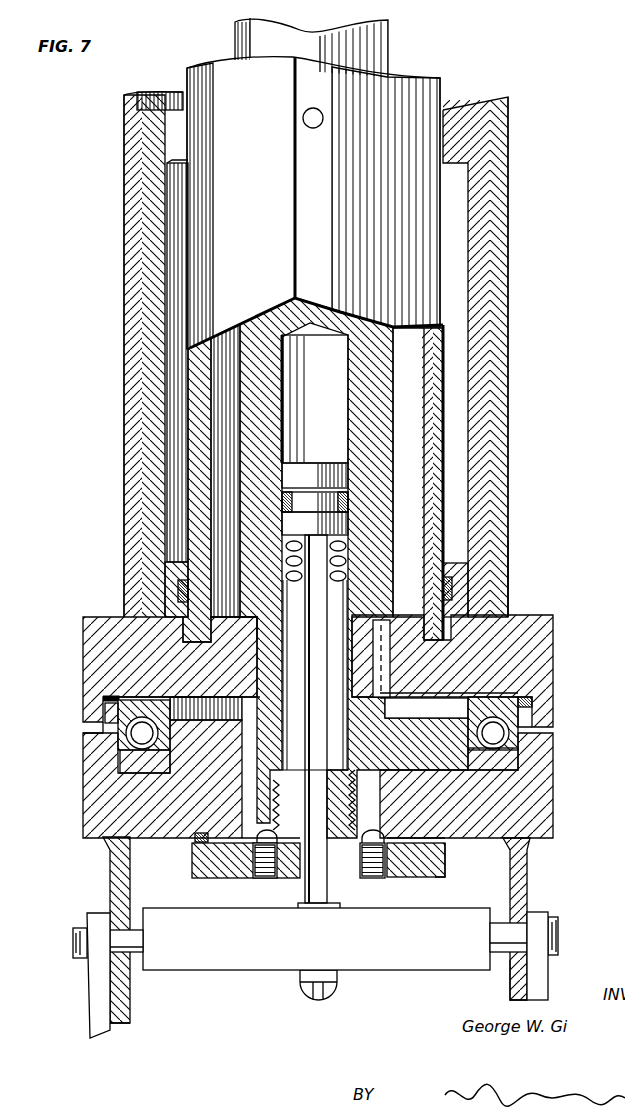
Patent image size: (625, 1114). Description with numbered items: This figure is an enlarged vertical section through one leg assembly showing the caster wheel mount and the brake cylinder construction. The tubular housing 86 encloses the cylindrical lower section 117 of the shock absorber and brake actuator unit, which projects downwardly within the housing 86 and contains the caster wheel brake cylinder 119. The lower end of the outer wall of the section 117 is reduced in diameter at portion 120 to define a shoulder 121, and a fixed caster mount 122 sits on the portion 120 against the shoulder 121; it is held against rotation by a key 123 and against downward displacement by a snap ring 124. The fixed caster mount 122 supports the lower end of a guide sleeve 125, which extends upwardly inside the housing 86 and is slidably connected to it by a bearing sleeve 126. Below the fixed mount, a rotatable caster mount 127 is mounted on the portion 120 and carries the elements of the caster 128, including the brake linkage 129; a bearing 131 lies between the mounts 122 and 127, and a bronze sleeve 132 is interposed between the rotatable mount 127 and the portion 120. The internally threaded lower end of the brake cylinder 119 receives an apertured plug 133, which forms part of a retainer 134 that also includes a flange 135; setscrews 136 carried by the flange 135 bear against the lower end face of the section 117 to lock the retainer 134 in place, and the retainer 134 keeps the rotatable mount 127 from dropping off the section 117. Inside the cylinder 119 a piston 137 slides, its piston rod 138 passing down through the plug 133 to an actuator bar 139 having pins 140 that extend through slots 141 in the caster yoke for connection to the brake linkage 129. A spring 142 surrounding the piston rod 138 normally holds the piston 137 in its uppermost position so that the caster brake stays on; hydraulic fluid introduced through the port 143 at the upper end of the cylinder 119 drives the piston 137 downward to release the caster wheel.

The tubular housing 86 is at (513, 575).
The cylindrical lower section 117 is at (402, 357).
The caster wheel brake cylinder 119 is at (390, 413).
The reduced diameter portion 120 is at (252, 670).
The shoulder 121 is at (247, 622).
The fixed caster mount 122 is at (540, 655).
The key 123 is at (388, 673).
The snap ring 124 is at (246, 704).
The guide sleeve 125 is at (440, 453).
The bearing sleeve 126 is at (478, 498).
The rotatable caster mount 127 is at (540, 798).
The caster 128 is at (530, 888).
The brake linkage 129 is at (90, 1013).
The bearing 131 is at (512, 762).
The bronze sleeve 132 is at (252, 783).
The apertured plug 133 is at (290, 815).
The retainer 134 is at (447, 862).
The flange 135 is at (422, 867).
The setscrews 136 is at (262, 878).
The piston 137 is at (313, 470).
The piston rod 138 is at (330, 888).
The actuator bar 139 is at (252, 958).
The pins 140 is at (73, 943).
The slots 141 is at (120, 973).
The spring 142 is at (343, 567).
The port 143 is at (300, 310).